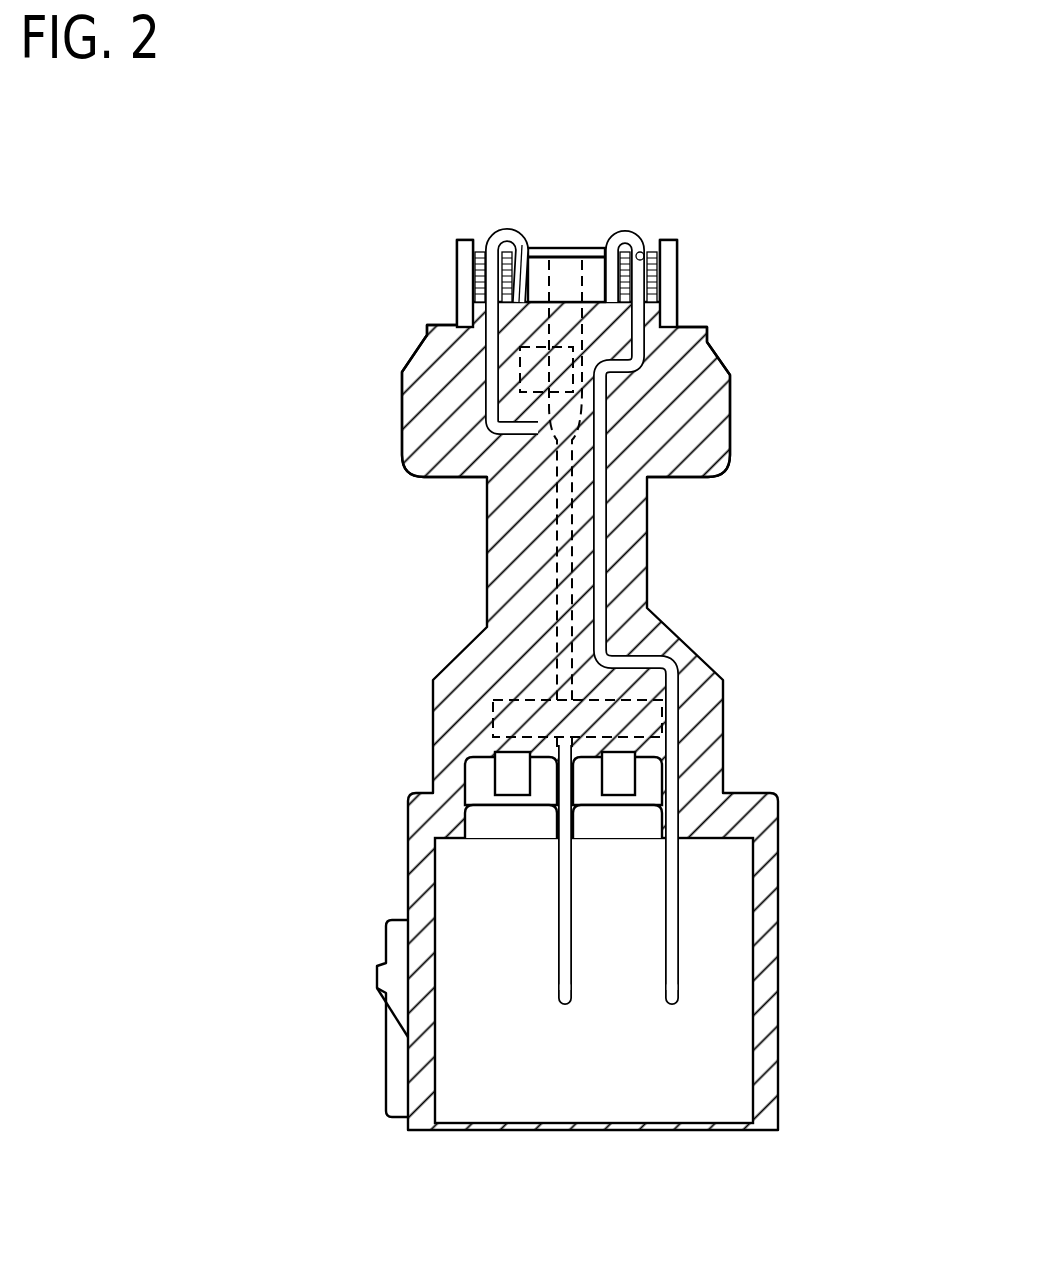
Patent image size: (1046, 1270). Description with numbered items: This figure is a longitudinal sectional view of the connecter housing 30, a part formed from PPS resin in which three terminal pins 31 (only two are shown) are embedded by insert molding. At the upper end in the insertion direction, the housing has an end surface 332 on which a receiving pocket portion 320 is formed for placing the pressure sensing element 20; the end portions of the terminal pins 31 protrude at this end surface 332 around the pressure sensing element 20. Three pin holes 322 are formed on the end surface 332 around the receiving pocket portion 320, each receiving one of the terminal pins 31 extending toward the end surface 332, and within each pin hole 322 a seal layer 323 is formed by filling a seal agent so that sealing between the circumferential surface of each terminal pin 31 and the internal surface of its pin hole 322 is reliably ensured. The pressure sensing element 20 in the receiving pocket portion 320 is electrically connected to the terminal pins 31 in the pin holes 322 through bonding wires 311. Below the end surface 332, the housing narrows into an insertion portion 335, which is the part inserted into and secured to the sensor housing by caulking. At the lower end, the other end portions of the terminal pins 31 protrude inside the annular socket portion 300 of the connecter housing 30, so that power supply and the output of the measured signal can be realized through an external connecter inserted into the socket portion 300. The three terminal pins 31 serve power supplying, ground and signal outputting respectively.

The pressure sensing element 20 is at (569, 282).
The connecter housing 30 is at (468, 677).
The terminal pins 31 is at (572, 620).
The socket portion 300 is at (370, 1006).
The bonding wires 311 is at (506, 237).
The receiving pocket portion 320 is at (527, 238).
The pin holes 322 is at (644, 239).
The seal layer 323 is at (474, 290).
The end surface 332 is at (486, 178).
The insertion portion 335 is at (690, 396).